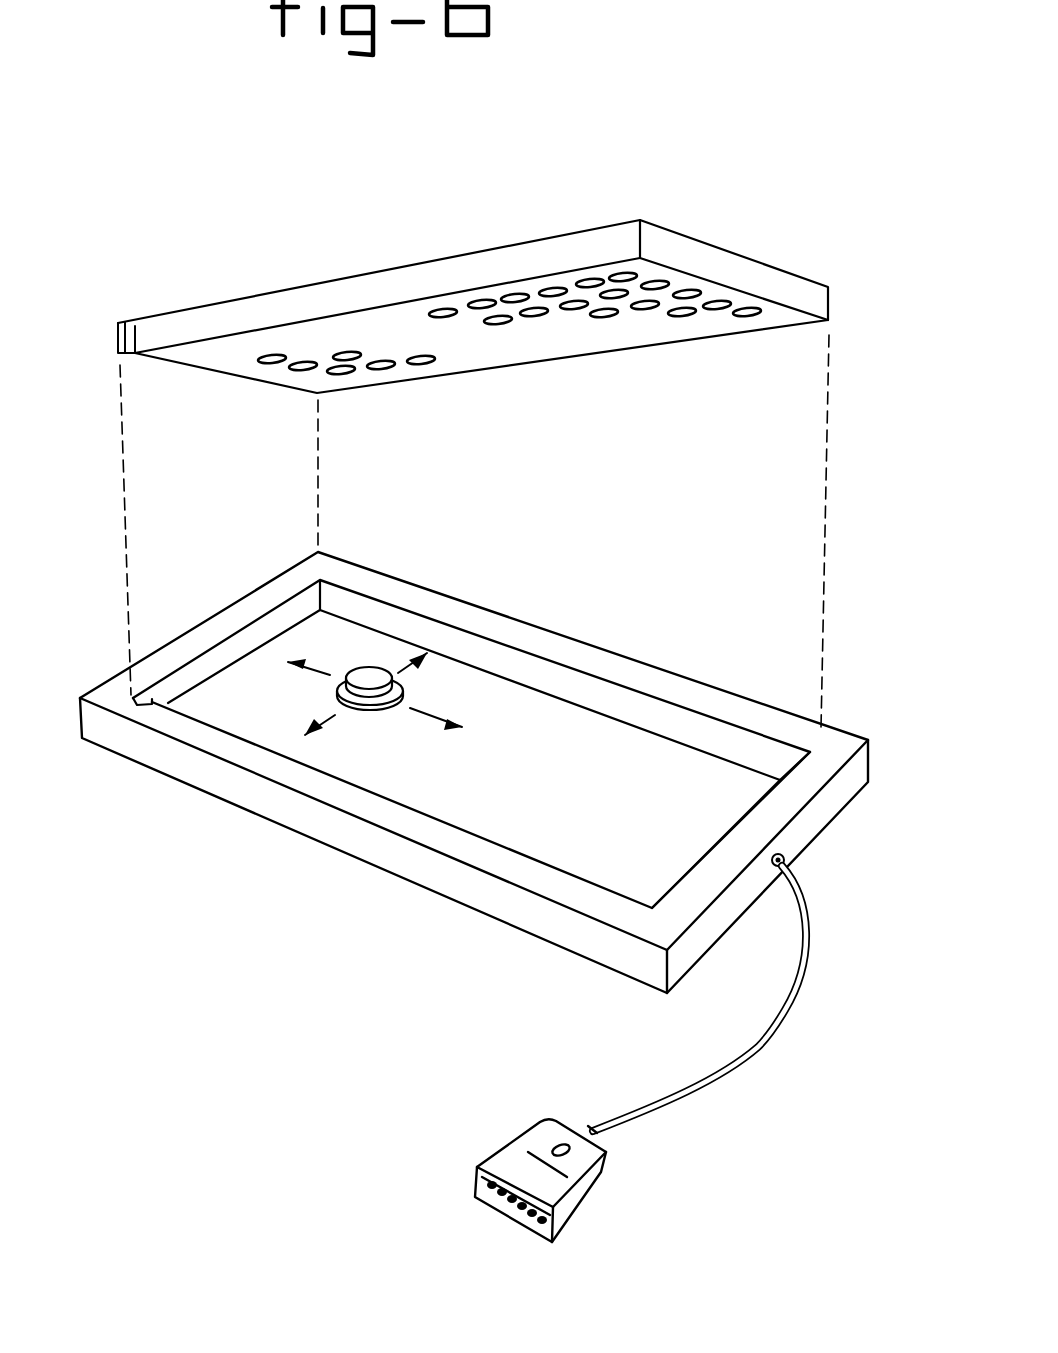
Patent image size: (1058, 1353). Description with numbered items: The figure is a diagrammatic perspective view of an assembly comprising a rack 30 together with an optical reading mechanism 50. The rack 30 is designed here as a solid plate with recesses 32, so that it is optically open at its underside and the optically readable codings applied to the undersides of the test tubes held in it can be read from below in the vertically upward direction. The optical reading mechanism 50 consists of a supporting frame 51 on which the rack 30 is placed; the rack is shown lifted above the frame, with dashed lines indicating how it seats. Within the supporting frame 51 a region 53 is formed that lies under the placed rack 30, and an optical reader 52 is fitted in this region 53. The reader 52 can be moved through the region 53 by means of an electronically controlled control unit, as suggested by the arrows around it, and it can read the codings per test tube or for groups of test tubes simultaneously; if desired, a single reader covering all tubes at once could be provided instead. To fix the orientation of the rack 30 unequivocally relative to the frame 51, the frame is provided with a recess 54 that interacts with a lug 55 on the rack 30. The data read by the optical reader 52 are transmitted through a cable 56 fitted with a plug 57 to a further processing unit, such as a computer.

The rack 30 is at (760, 254).
The recesses 32 is at (681, 314).
The lug 55 is at (128, 322).
The optical reading mechanism 50 is at (665, 660).
The supporting frame 51 is at (480, 897).
The optical reader 52 is at (372, 692).
The region 53 is at (372, 642).
The recess 54 is at (138, 698).
The cable 56 is at (787, 1007).
The plug 57 is at (575, 1193).